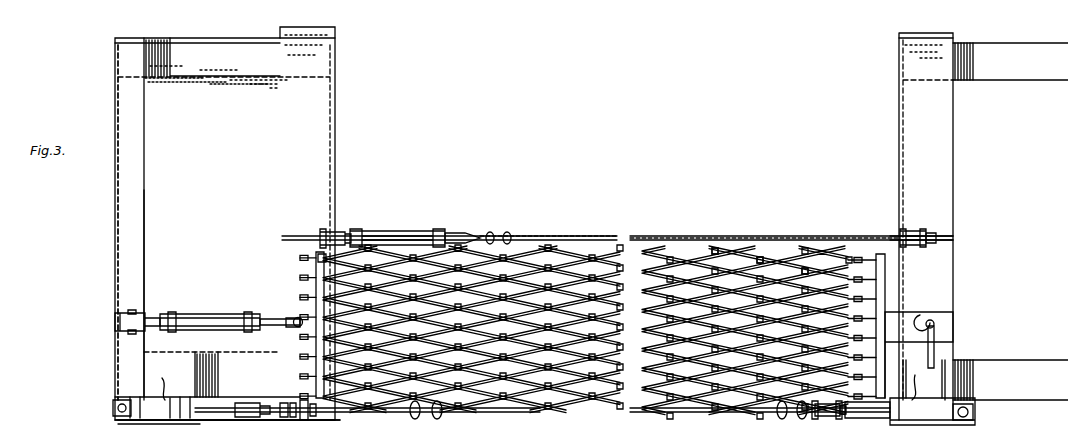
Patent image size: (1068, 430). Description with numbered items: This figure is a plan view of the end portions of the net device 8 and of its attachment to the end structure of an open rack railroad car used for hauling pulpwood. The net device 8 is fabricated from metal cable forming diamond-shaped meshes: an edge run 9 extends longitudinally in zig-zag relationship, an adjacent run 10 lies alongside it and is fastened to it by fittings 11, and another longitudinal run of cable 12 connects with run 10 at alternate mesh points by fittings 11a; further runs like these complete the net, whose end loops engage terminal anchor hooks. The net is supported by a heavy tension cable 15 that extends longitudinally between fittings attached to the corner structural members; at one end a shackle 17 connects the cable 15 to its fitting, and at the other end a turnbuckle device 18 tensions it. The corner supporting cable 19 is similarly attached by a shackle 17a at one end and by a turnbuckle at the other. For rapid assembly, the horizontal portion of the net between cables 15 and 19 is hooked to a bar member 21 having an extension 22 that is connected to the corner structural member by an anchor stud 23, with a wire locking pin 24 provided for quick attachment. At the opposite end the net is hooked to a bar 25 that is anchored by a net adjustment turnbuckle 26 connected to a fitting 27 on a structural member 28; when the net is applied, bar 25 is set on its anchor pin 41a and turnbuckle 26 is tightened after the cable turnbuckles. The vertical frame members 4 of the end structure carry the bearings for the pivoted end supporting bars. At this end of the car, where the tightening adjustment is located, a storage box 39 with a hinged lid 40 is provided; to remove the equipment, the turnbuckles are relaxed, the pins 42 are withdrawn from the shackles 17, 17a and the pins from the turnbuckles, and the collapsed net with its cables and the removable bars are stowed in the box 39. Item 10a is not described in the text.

The vertical frame member 4 is at (1030, 80).
The net device 8 is at (565, 255).
The edge run 9 is at (547, 235).
The adjacent run 10 is at (760, 240).
The pivot pin 10a is at (322, 418).
The fittings 11 is at (455, 246).
The fittings 11a is at (596, 254).
The longitudinal run of cable 12 is at (828, 262).
The supporting cable 15 is at (628, 240).
The shackle 17 is at (905, 232).
The shackle 17a is at (845, 420).
The turnbuckle device 18 is at (394, 229).
The corner supporting cable 19 is at (505, 414).
The bar member 21 is at (886, 300).
The extension 22 is at (946, 315).
The anchor stud 23 is at (936, 322).
The wire locking pin 24 is at (945, 341).
The bar 25 is at (310, 282).
The turnbuckle 26 is at (203, 315).
The fitting 27 is at (116, 322).
The structural member 28 is at (118, 258).
The storage box 39 is at (118, 183).
The hinged lid 40 is at (155, 194).
The anchor pin 41a is at (296, 318).
The pin 42 is at (936, 235).